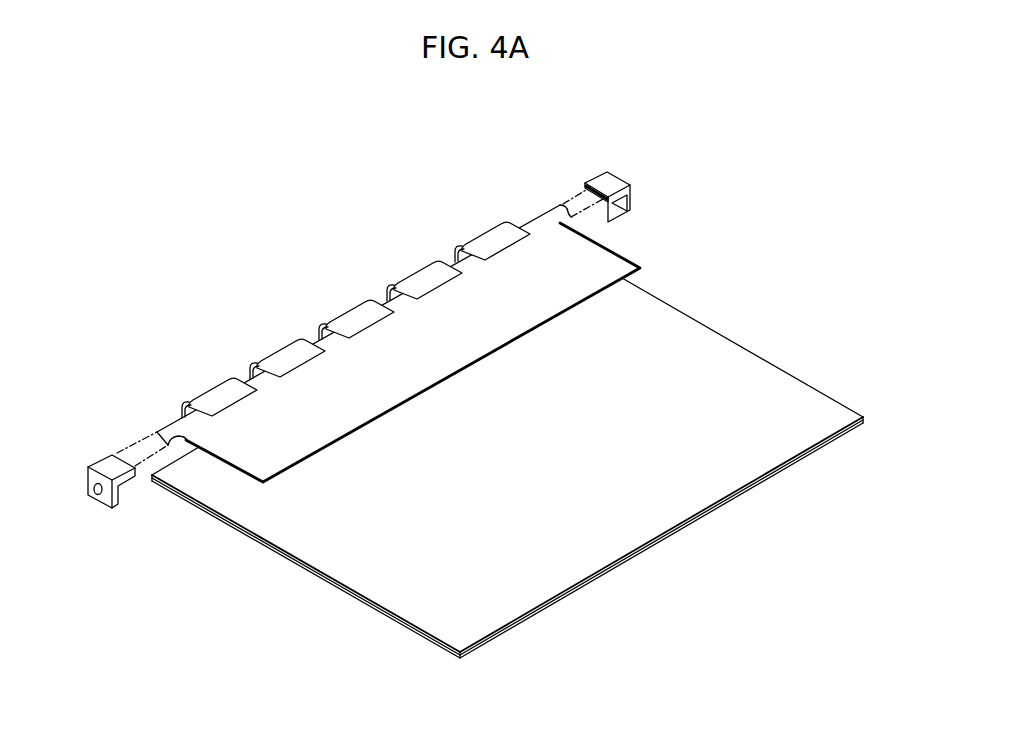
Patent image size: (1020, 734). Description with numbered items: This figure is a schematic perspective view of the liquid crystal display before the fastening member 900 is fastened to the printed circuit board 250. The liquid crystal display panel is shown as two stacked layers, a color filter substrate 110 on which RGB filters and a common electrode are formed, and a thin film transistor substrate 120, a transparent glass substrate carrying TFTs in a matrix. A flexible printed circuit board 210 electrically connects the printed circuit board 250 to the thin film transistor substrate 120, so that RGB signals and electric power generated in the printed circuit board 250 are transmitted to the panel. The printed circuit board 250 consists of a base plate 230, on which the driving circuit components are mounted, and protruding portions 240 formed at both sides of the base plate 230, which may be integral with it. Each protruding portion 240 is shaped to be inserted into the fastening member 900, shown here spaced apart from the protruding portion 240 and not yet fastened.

The color filter substrate 110 is at (445, 647).
The thin film transistor substrate 120 is at (433, 615).
The flexible printed circuit board 210 is at (378, 298).
The base plate 230 is at (515, 257).
The protruding portion 240 is at (560, 184).
The printed circuit board 250 is at (529, 188).
The fastening member 900 is at (629, 177).